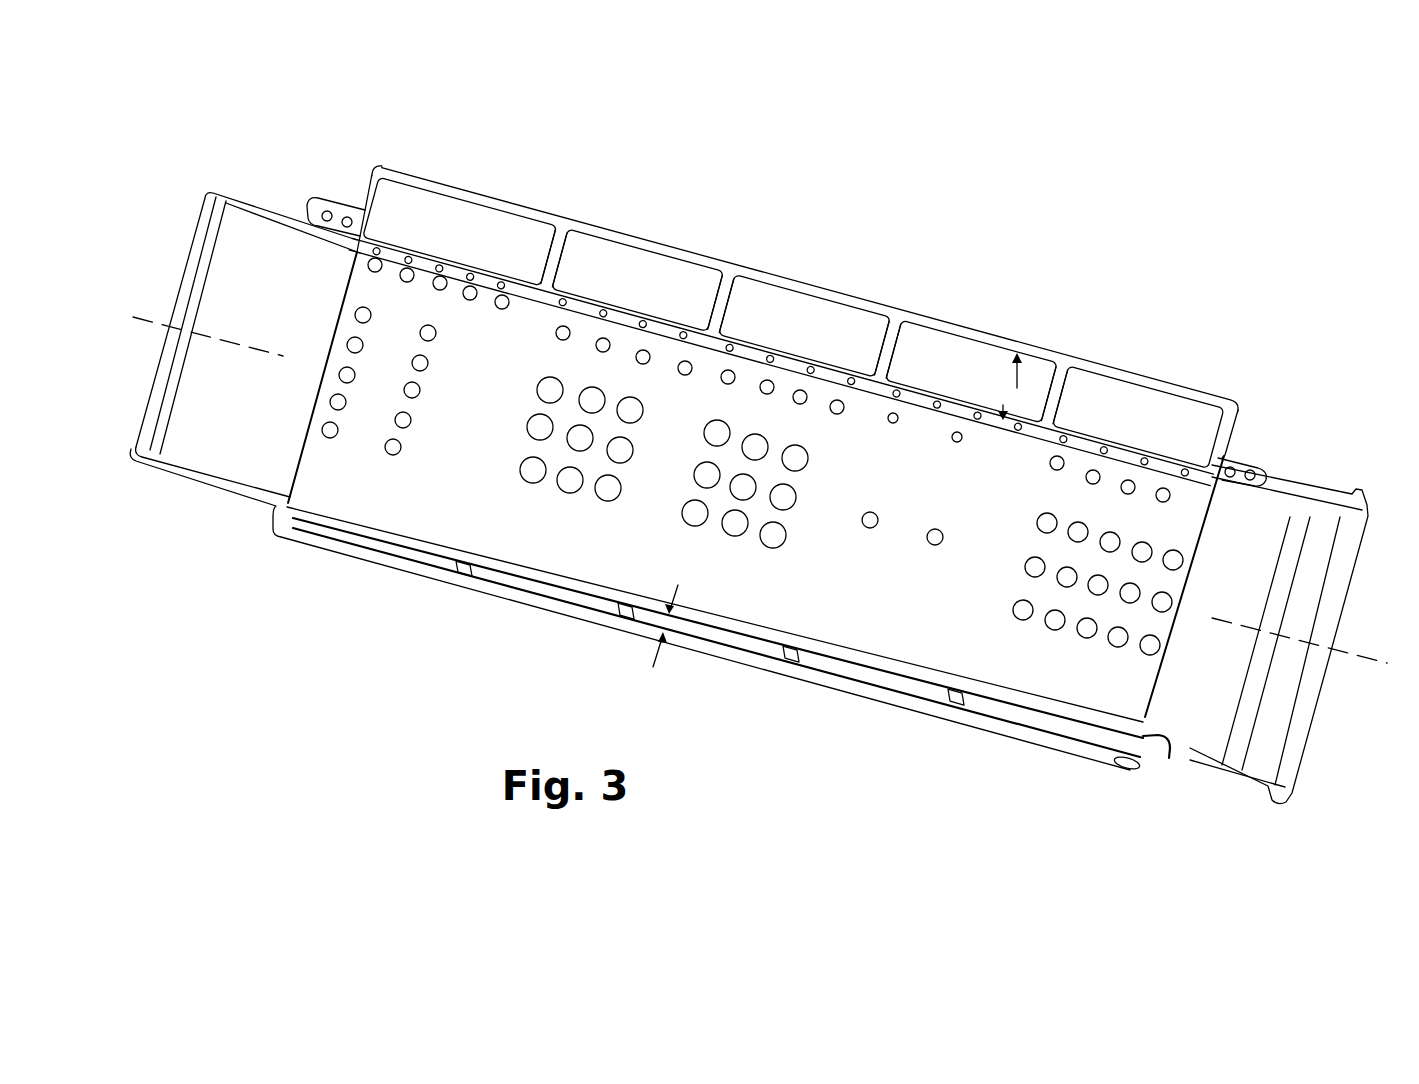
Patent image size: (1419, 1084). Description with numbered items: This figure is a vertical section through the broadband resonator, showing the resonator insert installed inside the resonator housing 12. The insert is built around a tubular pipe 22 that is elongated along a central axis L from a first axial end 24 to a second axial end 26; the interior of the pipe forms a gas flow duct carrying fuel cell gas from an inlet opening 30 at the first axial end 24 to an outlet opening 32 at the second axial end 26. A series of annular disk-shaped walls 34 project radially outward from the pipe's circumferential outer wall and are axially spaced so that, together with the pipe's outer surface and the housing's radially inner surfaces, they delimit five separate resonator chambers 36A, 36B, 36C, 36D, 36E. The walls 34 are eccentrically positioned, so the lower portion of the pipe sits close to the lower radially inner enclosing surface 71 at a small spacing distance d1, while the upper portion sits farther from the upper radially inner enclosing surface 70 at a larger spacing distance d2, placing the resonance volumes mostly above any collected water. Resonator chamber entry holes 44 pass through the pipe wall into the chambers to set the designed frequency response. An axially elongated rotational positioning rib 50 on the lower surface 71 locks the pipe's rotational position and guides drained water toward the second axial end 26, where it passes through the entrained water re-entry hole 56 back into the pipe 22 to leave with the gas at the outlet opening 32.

The resonator housing 12 is at (1150, 385).
The tubular pipe 22 is at (825, 604).
The first axial end 24 is at (135, 442).
The second axial end 26 is at (1303, 765).
The inlet opening 30 is at (164, 270).
The outlet opening 32 is at (1355, 721).
The annular disk-shaped walls 34 is at (553, 247).
The resonator chamber 36A is at (460, 231).
The resonator chamber 36B is at (638, 280).
The resonator chamber 36C is at (805, 326).
The resonator chamber 36D is at (972, 371).
The resonator chamber 36E is at (1138, 417).
The resonator chamber entry holes 44 is at (325, 437).
The axially elongated rotational positioning rib 50 is at (394, 546).
The entrained water re-entry hole 56 is at (1169, 760).
The upper radially inner enclosing surface 70 is at (838, 312).
The lower radially inner enclosing surface 71 is at (522, 545).
The central axis L is at (752, 482).
The spacing distance d1 is at (672, 611).
The spacing distance d2 is at (1006, 386).